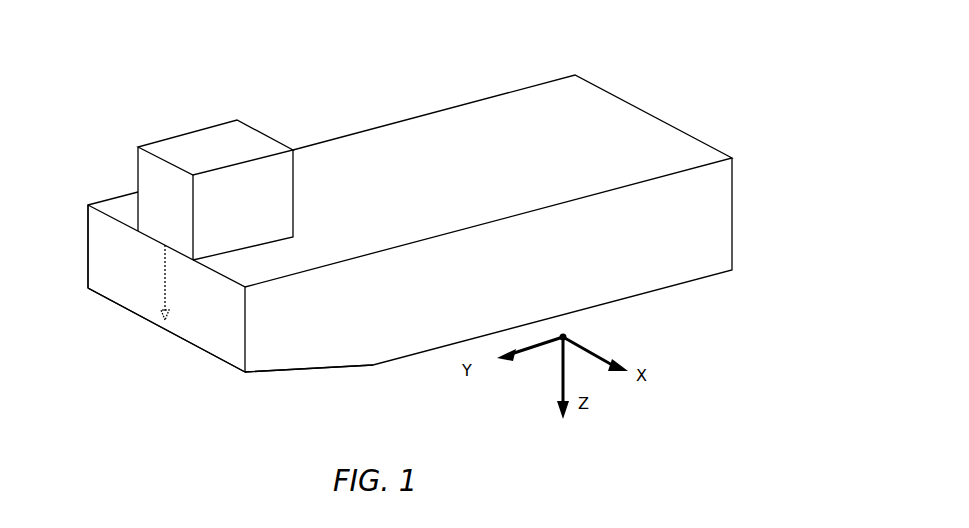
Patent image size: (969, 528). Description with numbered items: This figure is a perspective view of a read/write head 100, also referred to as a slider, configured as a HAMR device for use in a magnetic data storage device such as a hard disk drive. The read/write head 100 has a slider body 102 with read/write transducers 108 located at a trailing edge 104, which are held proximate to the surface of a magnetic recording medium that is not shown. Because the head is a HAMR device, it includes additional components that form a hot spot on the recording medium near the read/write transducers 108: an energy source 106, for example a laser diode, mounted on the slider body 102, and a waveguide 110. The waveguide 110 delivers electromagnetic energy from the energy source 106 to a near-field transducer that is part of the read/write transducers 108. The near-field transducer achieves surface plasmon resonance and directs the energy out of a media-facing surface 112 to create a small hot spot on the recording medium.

The read/write head 100 is at (299, 89).
The slider body 102 is at (362, 141).
The trailing edge 104 is at (88, 268).
The energy source 106 is at (218, 136).
The read/write transducers 108 is at (160, 337).
The waveguide 110 is at (163, 282).
The media-facing surface 112 is at (245, 374).